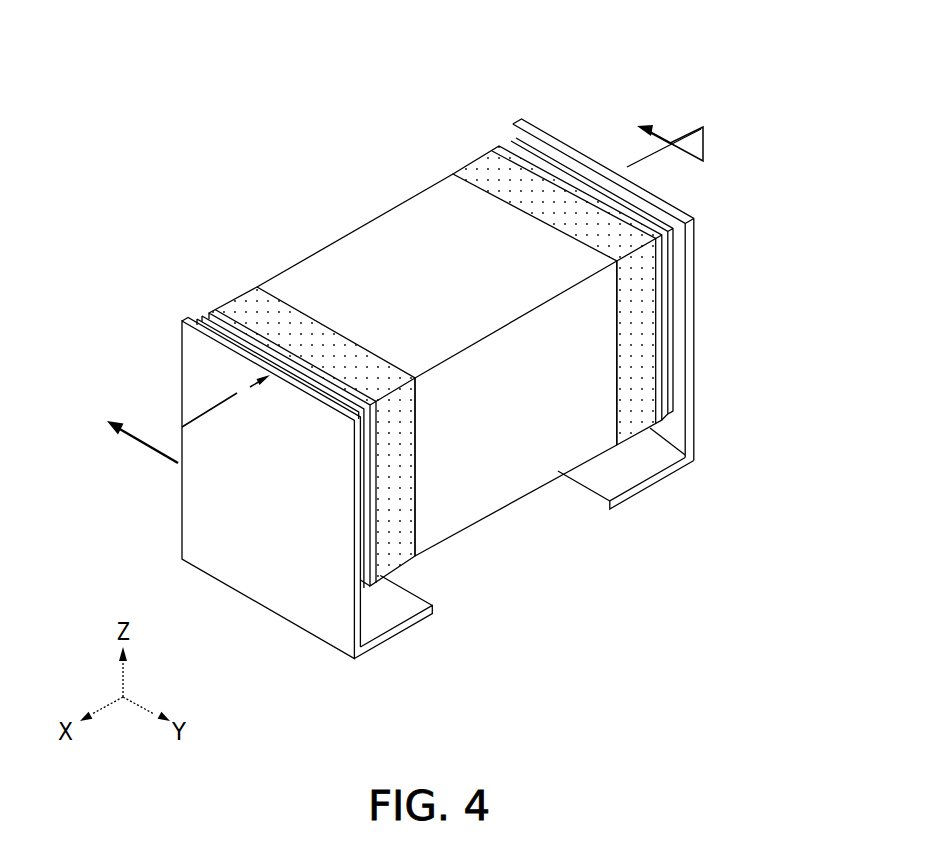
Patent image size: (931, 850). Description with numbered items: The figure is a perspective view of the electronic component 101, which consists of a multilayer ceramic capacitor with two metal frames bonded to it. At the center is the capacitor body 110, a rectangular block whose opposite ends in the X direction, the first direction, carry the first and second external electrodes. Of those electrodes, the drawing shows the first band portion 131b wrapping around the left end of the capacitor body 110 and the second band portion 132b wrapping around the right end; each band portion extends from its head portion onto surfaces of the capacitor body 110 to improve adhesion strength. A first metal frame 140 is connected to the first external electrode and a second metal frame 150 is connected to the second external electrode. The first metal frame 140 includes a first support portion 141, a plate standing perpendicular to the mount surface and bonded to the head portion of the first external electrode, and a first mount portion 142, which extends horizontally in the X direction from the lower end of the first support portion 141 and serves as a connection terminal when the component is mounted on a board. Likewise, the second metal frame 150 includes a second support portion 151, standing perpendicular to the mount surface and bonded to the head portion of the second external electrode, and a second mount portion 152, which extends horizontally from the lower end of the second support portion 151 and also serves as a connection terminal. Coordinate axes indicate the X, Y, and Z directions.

The electronic component 101 is at (263, 30).
The capacitor body 110 is at (368, 243).
The first band portion 131b is at (238, 312).
The second band portion 132b is at (490, 164).
The first metal frame 140 is at (270, 501).
The first support portion 141 is at (203, 529).
The first mount portion 142 is at (372, 620).
The second metal frame 150 is at (662, 328).
The second support portion 151 is at (678, 433).
The second mount portion 152 is at (628, 473).